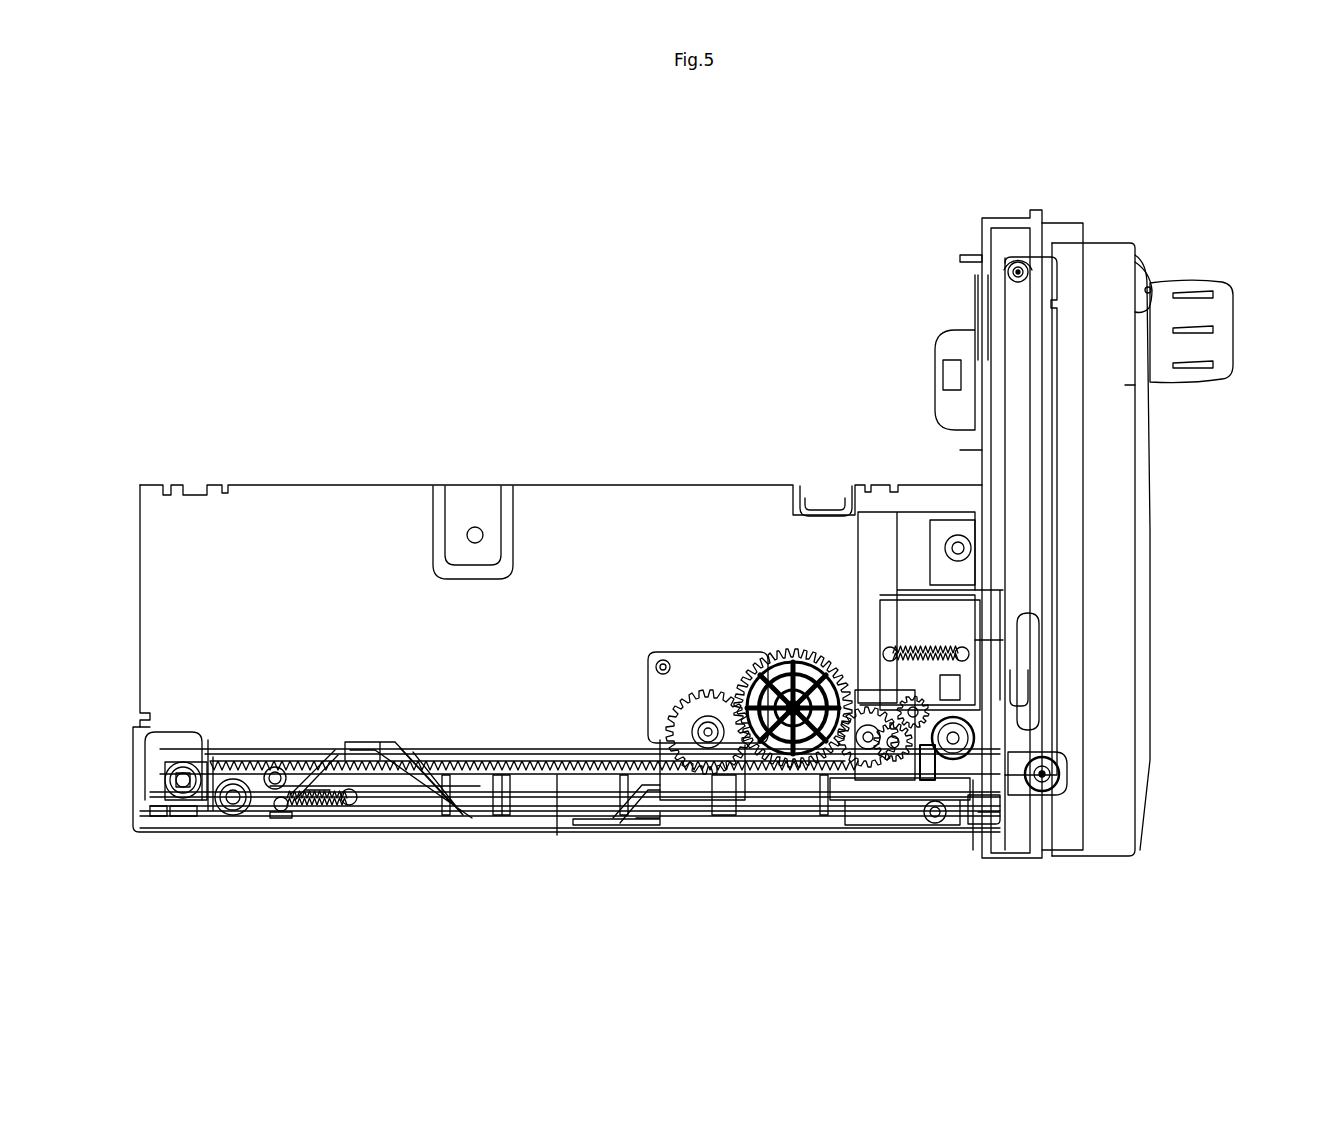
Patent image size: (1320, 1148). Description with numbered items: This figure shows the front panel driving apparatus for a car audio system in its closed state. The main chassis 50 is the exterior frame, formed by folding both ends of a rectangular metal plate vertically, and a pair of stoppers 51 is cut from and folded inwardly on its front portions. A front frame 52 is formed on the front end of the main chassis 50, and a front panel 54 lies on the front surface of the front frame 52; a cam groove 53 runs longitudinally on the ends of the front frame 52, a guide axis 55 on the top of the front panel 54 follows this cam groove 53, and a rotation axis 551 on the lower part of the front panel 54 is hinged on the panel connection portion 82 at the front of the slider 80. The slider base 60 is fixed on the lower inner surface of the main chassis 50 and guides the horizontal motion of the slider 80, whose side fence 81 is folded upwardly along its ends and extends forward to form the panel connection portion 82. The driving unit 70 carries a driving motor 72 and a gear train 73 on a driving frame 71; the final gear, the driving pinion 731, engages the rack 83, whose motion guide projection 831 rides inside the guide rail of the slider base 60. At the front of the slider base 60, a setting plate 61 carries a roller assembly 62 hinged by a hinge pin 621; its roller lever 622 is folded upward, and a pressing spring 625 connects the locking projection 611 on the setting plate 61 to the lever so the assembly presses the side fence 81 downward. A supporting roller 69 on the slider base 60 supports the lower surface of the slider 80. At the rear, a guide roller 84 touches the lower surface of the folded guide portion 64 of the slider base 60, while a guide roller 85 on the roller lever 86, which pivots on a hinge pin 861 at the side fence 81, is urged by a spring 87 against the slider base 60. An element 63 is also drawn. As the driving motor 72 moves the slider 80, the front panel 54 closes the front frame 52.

The main chassis 50 is at (262, 503).
The stopper 51 is at (875, 690).
The front frame 52 is at (1010, 222).
The cam groove 53 is at (1027, 383).
The front panel 54 is at (1123, 520).
The guide axis 55 is at (1020, 272).
The rotation axis 551 is at (1052, 788).
The slider base 60 is at (668, 822).
The setting plate 61 is at (972, 725).
The locking projection 611 is at (880, 628).
The hinge pin 621 is at (953, 650).
The roller lever 622 is at (968, 703).
The pressing spring 625 is at (887, 650).
The roller assembly 62 is at (866, 668).
The guide slot 63 is at (985, 760).
The guide portion 64 is at (262, 728).
The supporting roller 69 is at (946, 826).
The driving unit 70 is at (752, 595).
The driving frame 71 is at (683, 665).
The driving motor 72 is at (858, 517).
The gear train 73 is at (747, 650).
The driving pinion 731 is at (700, 683).
The slider 80 is at (877, 787).
The side fence 81 is at (967, 797).
The panel connection portion 82 is at (1005, 798).
The rack 83 is at (560, 835).
The motion guide projection 831 is at (512, 800).
The guide roller 84 is at (188, 800).
The guide roller 85 is at (241, 815).
The roller lever 86 is at (272, 792).
The hinge pin 861 is at (288, 815).
The spring 87 is at (330, 805).